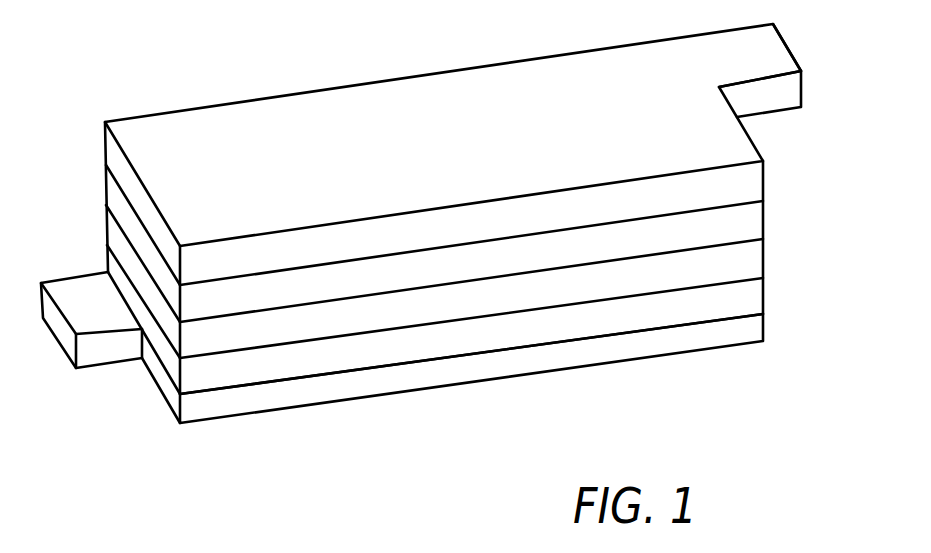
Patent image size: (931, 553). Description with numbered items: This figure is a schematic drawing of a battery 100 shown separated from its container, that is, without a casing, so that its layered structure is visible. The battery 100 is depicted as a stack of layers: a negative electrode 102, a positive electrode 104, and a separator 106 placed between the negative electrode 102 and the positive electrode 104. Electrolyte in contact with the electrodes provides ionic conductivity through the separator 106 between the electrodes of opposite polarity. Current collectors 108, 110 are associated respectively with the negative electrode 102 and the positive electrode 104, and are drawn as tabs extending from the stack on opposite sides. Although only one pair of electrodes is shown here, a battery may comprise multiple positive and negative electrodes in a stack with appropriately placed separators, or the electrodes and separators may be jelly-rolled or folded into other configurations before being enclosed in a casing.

The battery 100 is at (453, 136).
The negative electrode 102 is at (752, 220).
The positive electrode 104 is at (747, 303).
The separator 106 is at (749, 260).
The current collector 108 is at (775, 48).
The current collector 110 is at (749, 335).